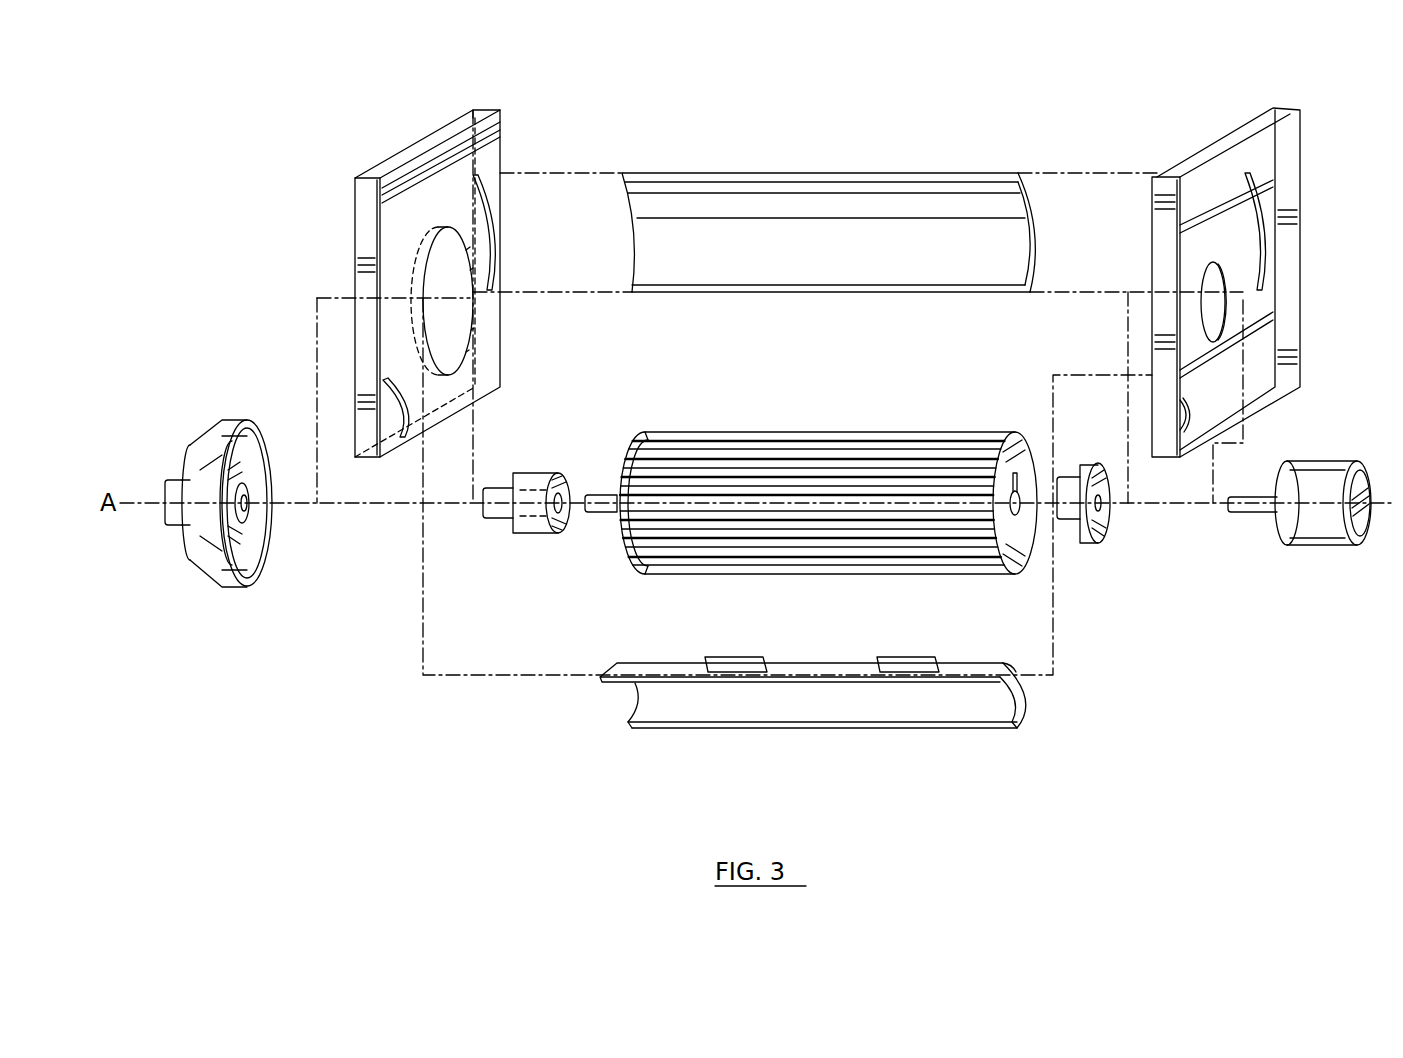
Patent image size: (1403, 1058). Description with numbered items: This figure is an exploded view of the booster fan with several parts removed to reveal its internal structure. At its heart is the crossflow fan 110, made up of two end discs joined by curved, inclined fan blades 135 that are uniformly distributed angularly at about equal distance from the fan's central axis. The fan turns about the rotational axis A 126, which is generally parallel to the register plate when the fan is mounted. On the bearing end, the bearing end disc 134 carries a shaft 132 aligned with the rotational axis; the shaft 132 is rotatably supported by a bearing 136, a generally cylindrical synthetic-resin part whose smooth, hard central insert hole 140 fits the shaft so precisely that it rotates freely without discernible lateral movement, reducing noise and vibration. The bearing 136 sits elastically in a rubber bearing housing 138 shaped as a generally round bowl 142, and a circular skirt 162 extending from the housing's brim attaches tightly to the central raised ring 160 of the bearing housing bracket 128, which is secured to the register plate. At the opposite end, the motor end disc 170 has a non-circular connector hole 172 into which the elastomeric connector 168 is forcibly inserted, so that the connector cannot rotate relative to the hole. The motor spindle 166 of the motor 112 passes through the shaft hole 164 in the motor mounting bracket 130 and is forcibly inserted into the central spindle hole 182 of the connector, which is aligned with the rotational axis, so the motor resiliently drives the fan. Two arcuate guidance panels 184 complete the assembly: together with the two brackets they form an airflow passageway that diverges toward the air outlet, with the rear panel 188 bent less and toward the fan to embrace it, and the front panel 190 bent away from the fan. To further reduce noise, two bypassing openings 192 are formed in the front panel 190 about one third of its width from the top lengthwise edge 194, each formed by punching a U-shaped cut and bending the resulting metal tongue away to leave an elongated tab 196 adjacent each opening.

The crossflow fan 110 is at (603, 556).
The motor 112 is at (1328, 545).
The rotational axis A 126 is at (138, 495).
The bearing housing bracket 128 is at (360, 192).
The motor mounting bracket 130 is at (1240, 148).
The shaft 132 is at (588, 494).
The bearing end disc 134 is at (617, 452).
The fan blades 135 is at (712, 450).
The bearing 136 is at (548, 470).
The rubber bearing housing 138 is at (223, 583).
The central insert hole 140 is at (562, 510).
The round bowl 142 is at (192, 445).
The central raised ring 160 is at (460, 218).
The circular skirt 162 is at (262, 563).
The shaft hole 164 is at (1213, 320).
The motor spindle 166 is at (1252, 512).
The elastomeric connector 168 is at (1093, 467).
The motor end disc 170 is at (1020, 440).
The connector hole 172 is at (1020, 515).
The central spindle hole 182 is at (1100, 508).
The guidance panels 184 is at (900, 185).
The rear panel 188 is at (835, 185).
The front panel 190 is at (885, 715).
The bypassing openings 192 is at (728, 673).
The top lengthwise edge 194 is at (957, 665).
The elongated tab 196 is at (765, 666).